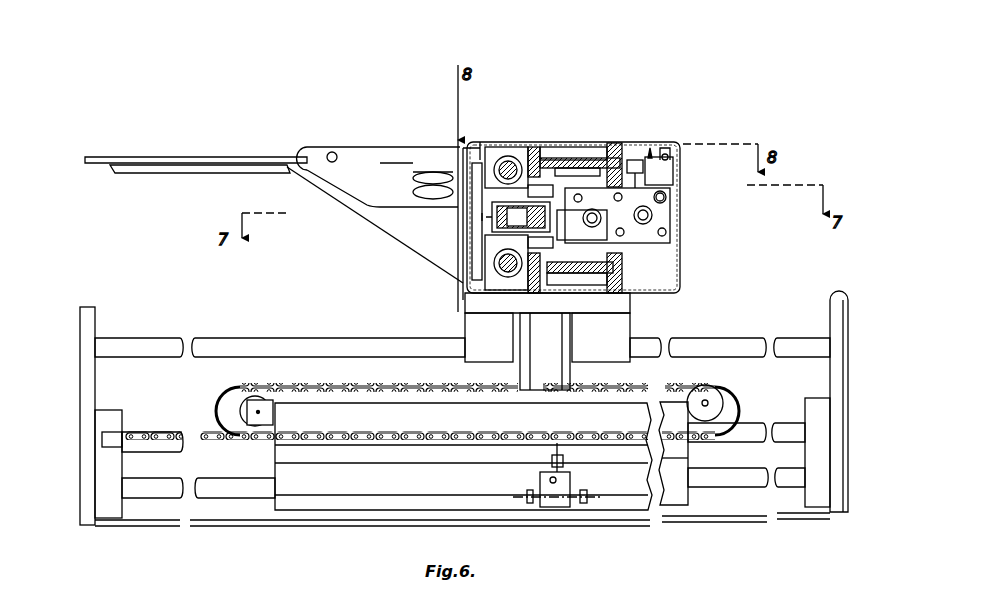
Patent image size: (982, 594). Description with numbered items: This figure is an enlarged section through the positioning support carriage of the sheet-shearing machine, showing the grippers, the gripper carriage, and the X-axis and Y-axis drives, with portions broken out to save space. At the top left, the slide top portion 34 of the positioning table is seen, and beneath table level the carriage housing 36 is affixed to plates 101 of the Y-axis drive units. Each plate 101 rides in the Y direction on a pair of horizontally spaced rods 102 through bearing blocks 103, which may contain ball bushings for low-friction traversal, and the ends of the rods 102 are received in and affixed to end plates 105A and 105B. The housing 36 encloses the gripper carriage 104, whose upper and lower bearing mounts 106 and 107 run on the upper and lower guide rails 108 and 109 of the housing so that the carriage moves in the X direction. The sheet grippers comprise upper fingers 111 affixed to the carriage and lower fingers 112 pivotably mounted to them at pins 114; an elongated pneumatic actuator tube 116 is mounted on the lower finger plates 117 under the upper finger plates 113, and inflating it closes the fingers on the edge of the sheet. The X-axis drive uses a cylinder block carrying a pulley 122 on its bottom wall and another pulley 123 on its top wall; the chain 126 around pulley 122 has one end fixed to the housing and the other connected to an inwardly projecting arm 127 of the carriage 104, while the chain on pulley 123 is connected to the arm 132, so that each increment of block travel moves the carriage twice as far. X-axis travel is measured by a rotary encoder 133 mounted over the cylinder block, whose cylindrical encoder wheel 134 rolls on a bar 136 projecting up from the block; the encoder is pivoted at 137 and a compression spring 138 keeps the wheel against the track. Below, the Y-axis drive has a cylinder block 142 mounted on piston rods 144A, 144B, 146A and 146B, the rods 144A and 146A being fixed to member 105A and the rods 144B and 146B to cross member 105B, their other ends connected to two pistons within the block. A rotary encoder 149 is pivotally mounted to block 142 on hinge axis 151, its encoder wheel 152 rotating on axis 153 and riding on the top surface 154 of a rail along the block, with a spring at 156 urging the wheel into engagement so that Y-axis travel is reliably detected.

The slide top portion 34 is at (193, 168).
The carriage housing 36 is at (480, 140).
The plate 101 is at (618, 303).
The rod 102 is at (693, 337).
The block 103 is at (547, 351).
The gripper carriage 104 is at (478, 237).
The end plate 105A is at (92, 325).
The end plate 105B is at (843, 308).
The upper bearing mount 106 is at (500, 150).
The lower bearing mount 107 is at (490, 275).
The upper guide rail 108 is at (513, 170).
The lower guide rail 109 is at (470, 297).
The upper finger 111 is at (360, 150).
The lower finger 112 is at (350, 173).
The upper finger plate 113 is at (423, 170).
The pin 114 is at (326, 156).
The pneumatic actuator tube 116 is at (417, 172).
The lower finger plate 117 is at (393, 251).
The pulley 122 is at (662, 232).
The pulley 123 is at (577, 177).
The chain 126 is at (605, 266).
The arm 127 is at (532, 242).
The arm 132 is at (530, 192).
The rotary encoder 133 is at (668, 172).
The encoder wheel 134 is at (633, 160).
The bar 136 is at (665, 198).
The pivot 137 is at (670, 158).
The compression spring 138 is at (668, 147).
The cylinder block 142 is at (325, 497).
The piston rod 144A is at (143, 447).
The piston rod 144B is at (797, 428).
The piston rod 146A is at (175, 493).
The piston rod 146B is at (790, 472).
The rotary encoder 149 is at (562, 503).
The hinge axis 151 is at (597, 497).
The encoder wheel 152 is at (563, 462).
The axis 153 is at (553, 445).
The top surface of rail 154 is at (400, 470).
The spring 156 is at (557, 480).